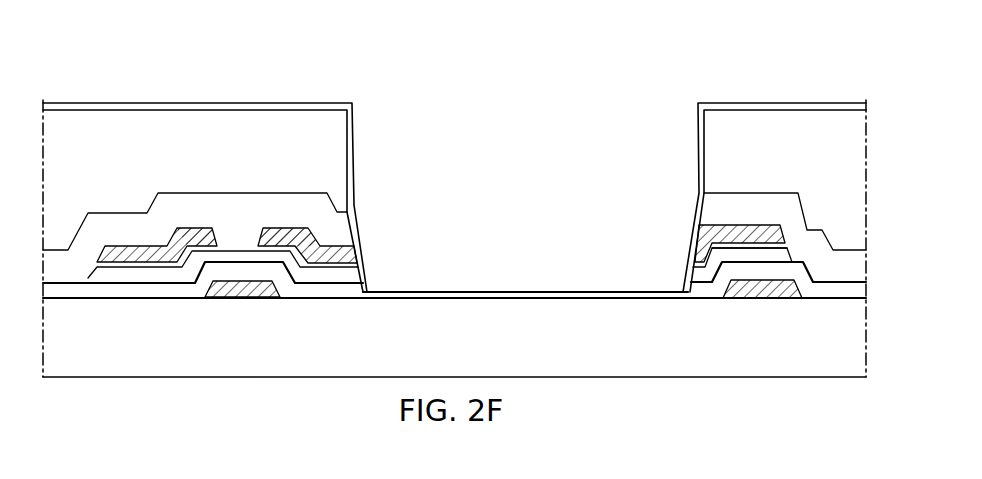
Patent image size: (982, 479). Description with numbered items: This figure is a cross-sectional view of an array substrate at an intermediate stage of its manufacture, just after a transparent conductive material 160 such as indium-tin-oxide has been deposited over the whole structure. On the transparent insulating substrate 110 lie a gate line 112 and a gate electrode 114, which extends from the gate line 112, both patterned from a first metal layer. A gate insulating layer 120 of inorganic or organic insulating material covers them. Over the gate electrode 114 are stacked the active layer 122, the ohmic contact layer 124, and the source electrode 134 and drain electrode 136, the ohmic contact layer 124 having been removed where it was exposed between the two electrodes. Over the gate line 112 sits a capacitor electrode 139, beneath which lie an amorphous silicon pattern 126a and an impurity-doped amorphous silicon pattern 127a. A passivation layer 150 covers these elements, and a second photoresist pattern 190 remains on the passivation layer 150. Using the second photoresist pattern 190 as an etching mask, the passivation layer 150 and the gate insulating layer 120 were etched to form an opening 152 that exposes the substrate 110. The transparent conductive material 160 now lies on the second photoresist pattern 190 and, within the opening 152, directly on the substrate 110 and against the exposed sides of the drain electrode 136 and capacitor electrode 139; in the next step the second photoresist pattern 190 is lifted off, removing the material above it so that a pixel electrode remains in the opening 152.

The transparent insulating substrate 110 is at (468, 350).
The gate line 112 is at (764, 290).
The gate electrode 114 is at (245, 290).
The gate insulating layer 120 is at (327, 290).
The active layer 122 is at (238, 255).
The ohmic contact layer 124 is at (118, 262).
The amorphous silicon pattern 126a is at (775, 253).
The impurity-doped amorphous silicon pattern 127a is at (727, 247).
The source electrode 134 is at (190, 228).
The drain electrode 136 is at (278, 228).
The capacitor electrode 139 is at (752, 224).
The passivation layer 150 is at (167, 218).
The opening 152 is at (485, 245).
The transparent conductive material 160 is at (288, 103).
The second photoresist pattern 190 is at (163, 130).